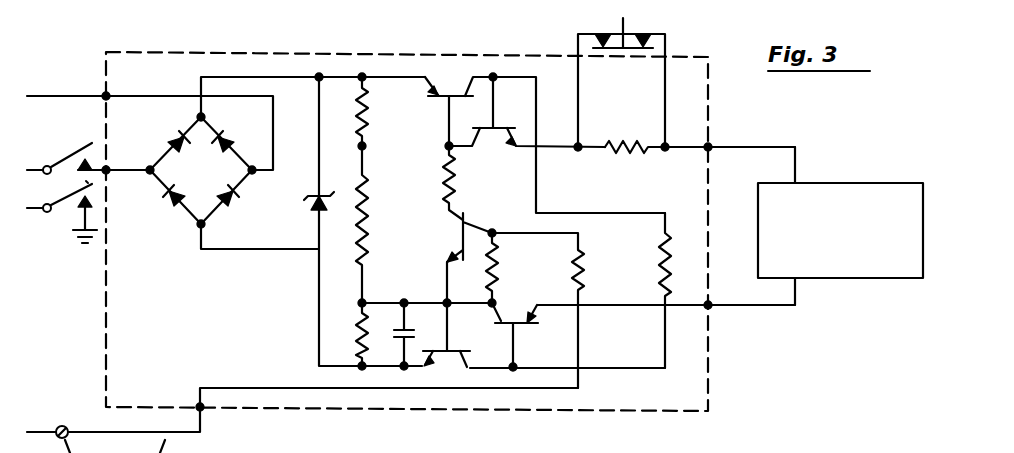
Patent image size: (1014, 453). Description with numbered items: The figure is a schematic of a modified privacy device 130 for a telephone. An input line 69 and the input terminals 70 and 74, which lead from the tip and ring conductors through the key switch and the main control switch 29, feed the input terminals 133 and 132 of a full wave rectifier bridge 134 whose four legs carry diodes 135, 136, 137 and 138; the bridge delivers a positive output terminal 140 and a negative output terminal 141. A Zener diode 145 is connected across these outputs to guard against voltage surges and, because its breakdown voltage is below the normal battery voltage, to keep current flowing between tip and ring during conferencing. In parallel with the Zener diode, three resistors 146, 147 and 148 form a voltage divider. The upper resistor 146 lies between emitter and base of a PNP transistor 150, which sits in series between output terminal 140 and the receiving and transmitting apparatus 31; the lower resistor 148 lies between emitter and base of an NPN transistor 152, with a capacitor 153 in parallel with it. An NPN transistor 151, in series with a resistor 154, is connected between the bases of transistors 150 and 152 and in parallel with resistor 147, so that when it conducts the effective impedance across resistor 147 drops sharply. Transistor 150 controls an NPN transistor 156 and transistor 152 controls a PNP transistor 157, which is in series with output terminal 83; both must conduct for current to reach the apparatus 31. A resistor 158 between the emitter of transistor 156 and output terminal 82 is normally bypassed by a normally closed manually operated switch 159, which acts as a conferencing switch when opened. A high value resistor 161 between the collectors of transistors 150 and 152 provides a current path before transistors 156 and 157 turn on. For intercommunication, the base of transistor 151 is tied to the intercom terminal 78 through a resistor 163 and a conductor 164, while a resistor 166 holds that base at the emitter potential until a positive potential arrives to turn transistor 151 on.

The main control switch 29 is at (72, 140).
The receiving and transmitting apparatus 31 is at (862, 182).
The input line 69 is at (80, 95).
The input terminal 70 is at (108, 95).
The input terminal 74 is at (108, 174).
The intercom terminal 78 is at (204, 411).
The output terminal 82 is at (712, 146).
The output terminal 83 is at (712, 309).
The privacy device 130 is at (268, 52).
The input terminal of rectifier bridge 132 is at (152, 165).
The input terminal of rectifier bridge 133 is at (258, 172).
The full wave rectifier bridge 134 is at (180, 214).
The diode 135 is at (176, 136).
The diode 136 is at (226, 150).
The diode 137 is at (230, 205).
The diode 138 is at (179, 196).
The output terminal of rectifier bridge 140 is at (205, 117).
The output terminal of rectifier bridge 141 is at (196, 229).
The Zener diode 145 is at (296, 198).
The resistor 146 is at (368, 122).
The resistor 147 is at (370, 243).
The resistor 148 is at (358, 325).
The PNP transistor 150 is at (446, 85).
The NPN transistor 151 is at (472, 208).
The NPN transistor 152 is at (468, 340).
The capacitor 153 is at (416, 333).
The resistor 154 is at (444, 178).
The NPN transistor 156 is at (496, 133).
The PNP transistor 157 is at (510, 312).
The resistor 158 is at (632, 152).
The manually operated switch 159 is at (662, 26).
The resistor 161 is at (659, 255).
The resistor 163 is at (585, 283).
The conductor 164 is at (275, 386).
The resistor 166 is at (500, 265).